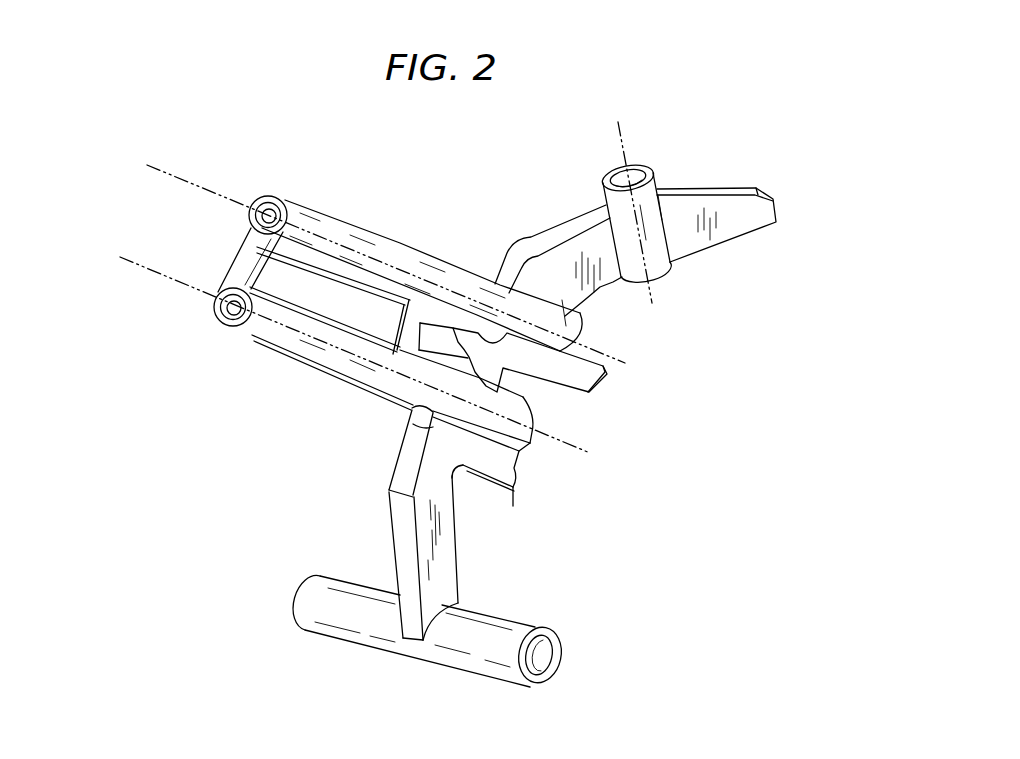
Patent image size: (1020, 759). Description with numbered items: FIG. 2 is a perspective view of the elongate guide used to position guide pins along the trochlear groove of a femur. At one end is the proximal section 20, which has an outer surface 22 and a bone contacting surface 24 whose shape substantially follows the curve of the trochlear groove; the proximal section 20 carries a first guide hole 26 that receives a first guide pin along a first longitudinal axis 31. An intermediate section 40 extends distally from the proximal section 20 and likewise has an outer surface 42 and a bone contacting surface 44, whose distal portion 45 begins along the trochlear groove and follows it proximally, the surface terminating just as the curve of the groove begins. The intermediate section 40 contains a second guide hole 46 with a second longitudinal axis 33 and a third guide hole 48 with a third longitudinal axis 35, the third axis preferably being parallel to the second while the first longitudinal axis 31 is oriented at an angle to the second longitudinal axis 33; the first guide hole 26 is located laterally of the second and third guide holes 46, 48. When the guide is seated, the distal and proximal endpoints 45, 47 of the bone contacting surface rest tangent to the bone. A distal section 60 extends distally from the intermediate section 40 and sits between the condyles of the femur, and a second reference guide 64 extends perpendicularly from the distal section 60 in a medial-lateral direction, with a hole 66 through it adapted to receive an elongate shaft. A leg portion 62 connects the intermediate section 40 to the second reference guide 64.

The proximal section 20 is at (565, 181).
The outer surface 22 is at (553, 230).
The bone contacting surface 24 is at (707, 248).
The first guide hole 26 is at (645, 167).
The first longitudinal axis 31 is at (623, 133).
The second longitudinal axis 33 is at (175, 178).
The third longitudinal axis 35 is at (580, 445).
The intermediate section 40 is at (305, 432).
The outer surface 42 is at (400, 461).
The bone contacting surface 44 is at (518, 483).
The distal portion 45 is at (513, 505).
The second guide hole 46 is at (275, 202).
The proximal endpoint 47 is at (567, 324).
The third guide hole 48 is at (230, 327).
The distal section 60 is at (268, 626).
The leg lower portion 62 is at (393, 540).
The second reference guide 64 is at (510, 622).
The hole 66 is at (536, 655).